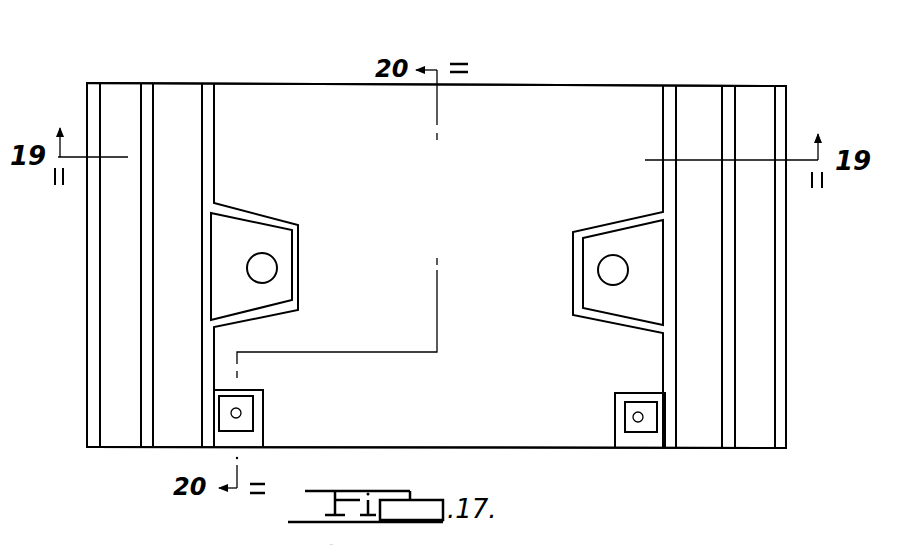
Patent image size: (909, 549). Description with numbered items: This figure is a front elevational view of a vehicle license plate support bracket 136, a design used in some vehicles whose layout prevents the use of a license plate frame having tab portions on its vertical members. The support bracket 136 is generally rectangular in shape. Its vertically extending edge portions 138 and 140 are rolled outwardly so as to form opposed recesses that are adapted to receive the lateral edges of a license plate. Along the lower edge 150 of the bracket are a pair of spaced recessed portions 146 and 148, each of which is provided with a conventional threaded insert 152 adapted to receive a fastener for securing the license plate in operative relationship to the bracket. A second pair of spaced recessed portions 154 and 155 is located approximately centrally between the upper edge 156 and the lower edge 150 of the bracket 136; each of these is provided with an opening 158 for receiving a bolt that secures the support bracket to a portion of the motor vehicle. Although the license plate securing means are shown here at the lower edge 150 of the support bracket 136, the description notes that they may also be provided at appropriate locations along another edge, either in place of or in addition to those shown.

The support bracket 136 is at (217, 72).
The vertically extending edge portion 138 is at (90, 207).
The vertically extending edge portion 140 is at (783, 103).
The recessed portion 146 is at (250, 437).
The recessed portion 148 is at (643, 442).
The lower edge 150 is at (436, 467).
The threaded insert 152 is at (248, 407).
The recessed portion 154 is at (267, 235).
The recessed portion 155 is at (608, 240).
The upper edge 156 is at (518, 85).
The opening 158 is at (263, 263).